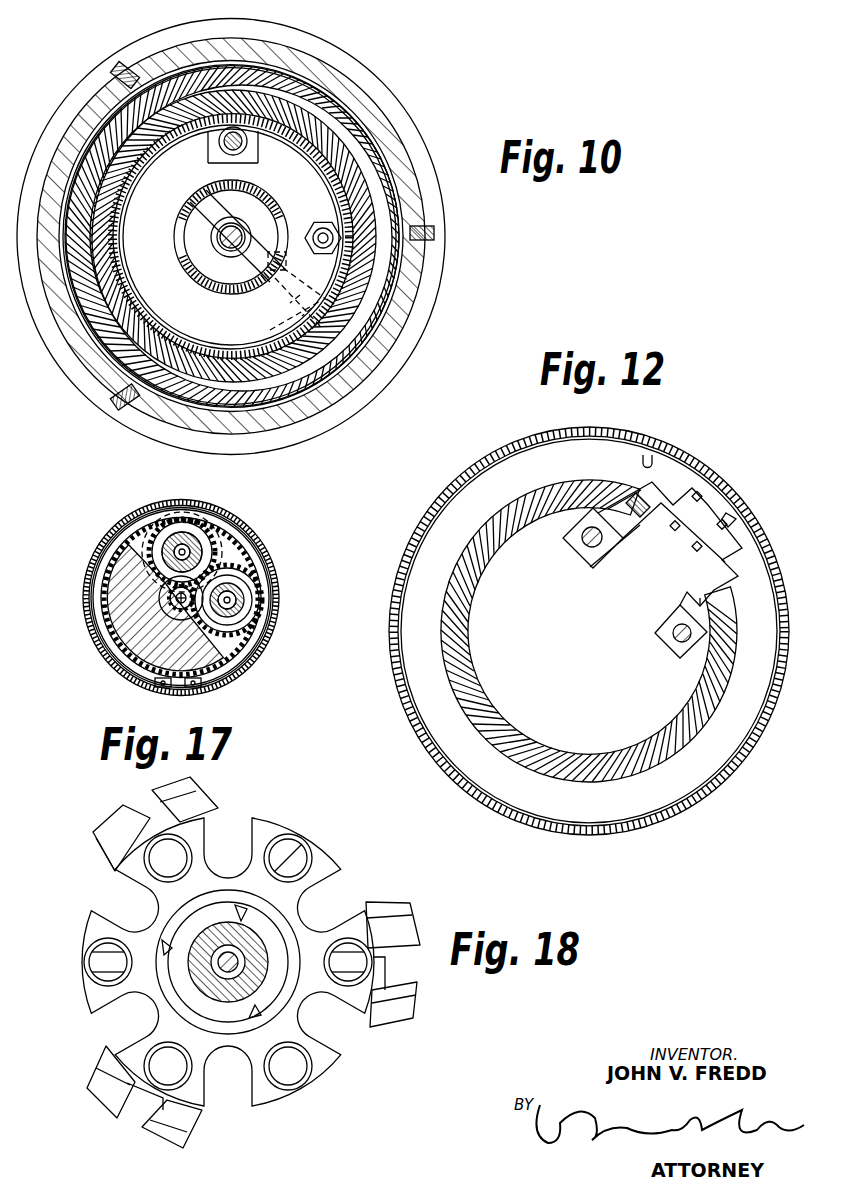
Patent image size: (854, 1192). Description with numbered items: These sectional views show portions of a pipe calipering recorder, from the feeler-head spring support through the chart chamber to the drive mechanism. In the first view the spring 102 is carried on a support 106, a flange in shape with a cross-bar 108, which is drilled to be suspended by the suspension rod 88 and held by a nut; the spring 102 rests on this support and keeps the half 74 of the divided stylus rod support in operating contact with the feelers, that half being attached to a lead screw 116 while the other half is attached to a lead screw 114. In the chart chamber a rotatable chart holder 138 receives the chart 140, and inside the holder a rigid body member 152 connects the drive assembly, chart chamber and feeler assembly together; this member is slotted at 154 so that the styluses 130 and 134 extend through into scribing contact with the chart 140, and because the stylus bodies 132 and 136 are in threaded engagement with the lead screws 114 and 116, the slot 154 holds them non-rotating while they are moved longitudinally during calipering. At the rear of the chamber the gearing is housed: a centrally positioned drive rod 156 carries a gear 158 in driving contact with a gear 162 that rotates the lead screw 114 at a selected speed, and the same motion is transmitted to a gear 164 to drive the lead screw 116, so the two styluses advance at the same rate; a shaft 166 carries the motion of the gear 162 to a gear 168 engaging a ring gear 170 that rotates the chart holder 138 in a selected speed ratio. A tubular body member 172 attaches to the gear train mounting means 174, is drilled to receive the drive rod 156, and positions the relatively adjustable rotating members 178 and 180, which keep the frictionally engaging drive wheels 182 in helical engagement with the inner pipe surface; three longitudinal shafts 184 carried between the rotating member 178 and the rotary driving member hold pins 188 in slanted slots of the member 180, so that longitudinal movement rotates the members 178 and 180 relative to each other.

In FIG. 10, the stylus rod support portion 74 is at (278, 219).
In FIG. 10, the suspension rod 88 is at (245, 227).
In FIG. 10, the spring 102 is at (285, 128).
In FIG. 10, the support 106 is at (292, 313).
In FIG. 10, the cross-bar 108 is at (195, 218).
In FIG. 12, the lead screw 114 is at (583, 543).
In FIG. 17, the lead screw 114 is at (163, 530).
In FIG. 12, the lead screw 116 is at (675, 645).
In FIG. 17, the lead screw 116 is at (238, 598).
In FIG. 12, the stylus 130 is at (706, 503).
In FIG. 12, the stylus body 132 is at (642, 527).
In FIG. 12, the stylus 134 is at (728, 518).
In FIG. 12, the stylus body 136 is at (697, 600).
In FIG. 12, the rotatable chart holder 138 is at (438, 518).
In FIG. 12, the chart 140 is at (655, 462).
In FIG. 10, the rigid body member 152 is at (118, 145).
In FIG. 12, the rigid body member 152 is at (462, 683).
In FIG. 12, the slot 154 is at (624, 495).
In FIG. 17, the drive rod 156 is at (170, 598).
In FIG. 18, the drive rod 156 is at (245, 972).
In FIG. 17, the gear 158 is at (148, 635).
In FIG. 17, the gear 162 is at (210, 548).
In FIG. 17, the gear 164 is at (245, 607).
In FIG. 17, the shaft 166 is at (168, 548).
In FIG. 17, the gear 168 is at (187, 540).
In FIG. 17, the ring gear 170 is at (243, 587).
In FIG. 18, the body member 172 is at (231, 938).
In FIG. 17, the gear train mounting means 174 is at (197, 654).
In FIG. 18, the rotating member 178 is at (353, 907).
In FIG. 18, the rotating member 180 is at (316, 914).
In FIG. 18, the drive wheels 182 is at (113, 822).
In FIG. 18, the longitudinal shafts 184 is at (304, 917).
In FIG. 18, the pins 188 is at (287, 864).